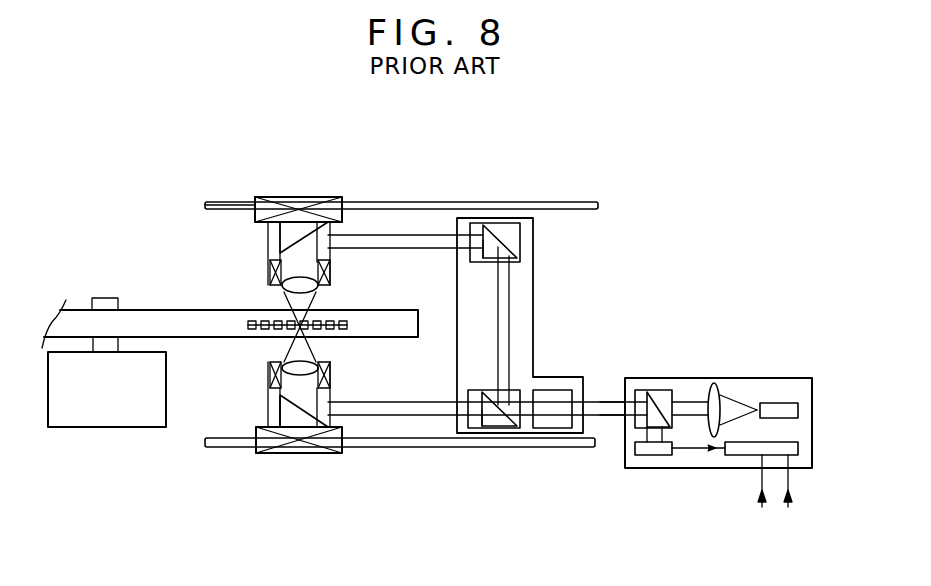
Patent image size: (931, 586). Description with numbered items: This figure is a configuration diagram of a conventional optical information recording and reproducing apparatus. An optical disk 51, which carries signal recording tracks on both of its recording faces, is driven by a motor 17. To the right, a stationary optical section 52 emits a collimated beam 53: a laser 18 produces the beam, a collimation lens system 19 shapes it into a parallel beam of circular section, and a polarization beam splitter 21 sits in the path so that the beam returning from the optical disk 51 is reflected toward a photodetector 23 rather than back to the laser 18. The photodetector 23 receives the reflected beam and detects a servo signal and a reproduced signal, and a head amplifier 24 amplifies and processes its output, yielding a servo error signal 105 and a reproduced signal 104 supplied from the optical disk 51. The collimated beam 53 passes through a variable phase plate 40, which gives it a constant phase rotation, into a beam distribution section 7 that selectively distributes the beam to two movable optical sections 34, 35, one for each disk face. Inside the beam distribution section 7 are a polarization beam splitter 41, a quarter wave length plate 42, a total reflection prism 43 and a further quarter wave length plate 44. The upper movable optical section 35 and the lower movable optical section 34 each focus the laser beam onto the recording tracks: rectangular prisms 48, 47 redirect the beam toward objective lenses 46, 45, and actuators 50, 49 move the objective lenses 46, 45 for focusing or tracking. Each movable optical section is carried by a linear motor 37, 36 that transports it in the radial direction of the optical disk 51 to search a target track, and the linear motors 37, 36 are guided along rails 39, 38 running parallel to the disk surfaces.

The beam distribution section 7 is at (535, 333).
The motor 17 is at (102, 428).
The laser 18 is at (792, 402).
The collimation lens system 19 is at (718, 380).
The polarization beam splitter 21 is at (660, 390).
The photodetector 23 is at (653, 455).
The head amplifier 24 is at (800, 447).
The movable optical section 34 is at (270, 408).
The movable optical section 35 is at (268, 238).
The linear motor 36 is at (297, 447).
The linear motor 37 is at (302, 202).
The rail 38 is at (408, 447).
The rail 39 is at (495, 202).
The variable phase plate 40 is at (570, 388).
The polarization beam splitter 41 is at (505, 423).
The quarter wave length plate 42 is at (475, 427).
The total reflection prism 43 is at (520, 240).
The quarter wave length plate 44 is at (483, 228).
The objective lens 45 is at (287, 367).
The objective lens 46 is at (270, 277).
The rectangular prism 47 is at (297, 417).
The rectangular prism 48 is at (255, 203).
The actuator 49 is at (328, 370).
The actuator 50 is at (330, 272).
The optical disk 51 is at (140, 317).
The stationary optical section 52 is at (715, 470).
The collimated beam 53 is at (607, 422).
The reproduced signal 104 is at (790, 480).
The servo error signal 105 is at (761, 488).